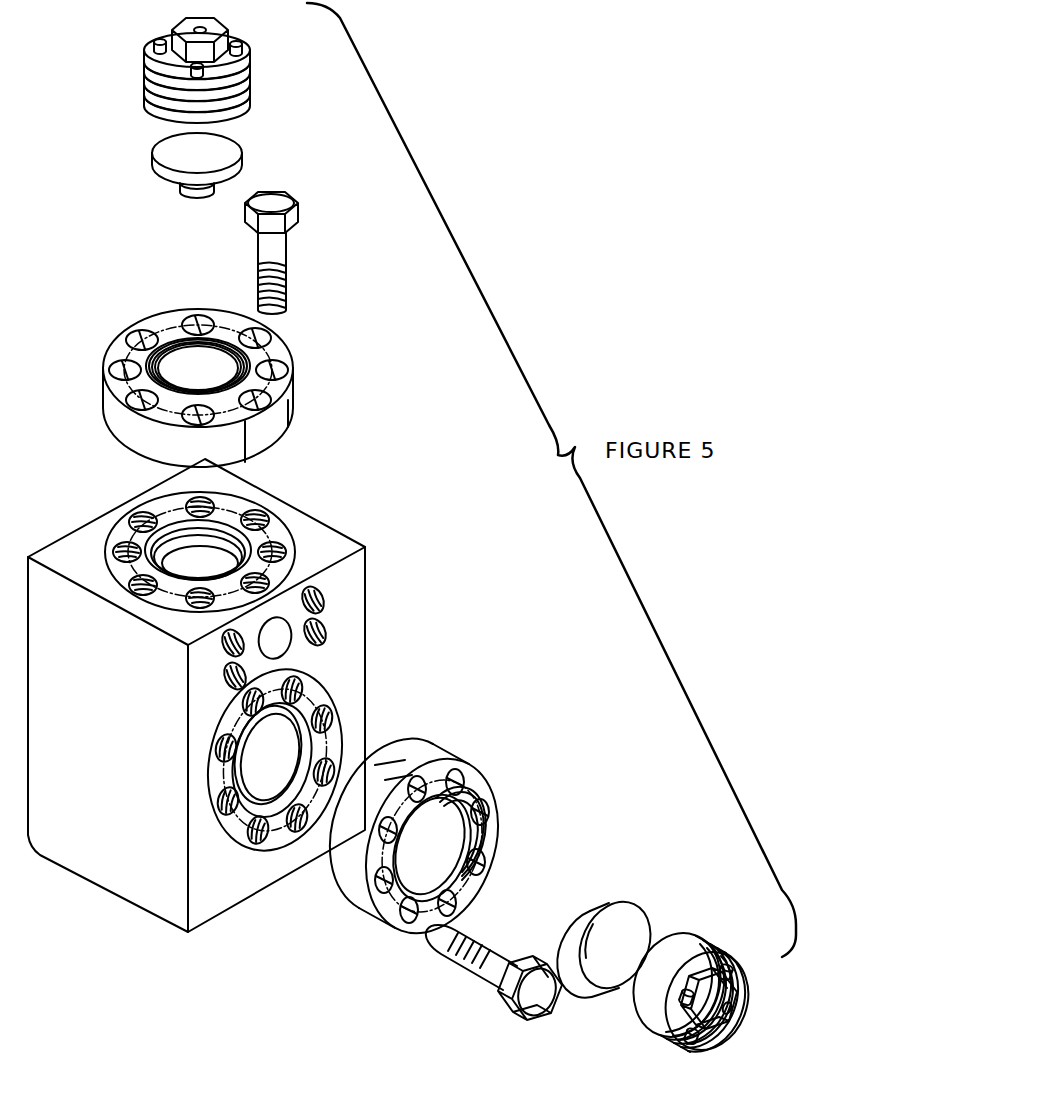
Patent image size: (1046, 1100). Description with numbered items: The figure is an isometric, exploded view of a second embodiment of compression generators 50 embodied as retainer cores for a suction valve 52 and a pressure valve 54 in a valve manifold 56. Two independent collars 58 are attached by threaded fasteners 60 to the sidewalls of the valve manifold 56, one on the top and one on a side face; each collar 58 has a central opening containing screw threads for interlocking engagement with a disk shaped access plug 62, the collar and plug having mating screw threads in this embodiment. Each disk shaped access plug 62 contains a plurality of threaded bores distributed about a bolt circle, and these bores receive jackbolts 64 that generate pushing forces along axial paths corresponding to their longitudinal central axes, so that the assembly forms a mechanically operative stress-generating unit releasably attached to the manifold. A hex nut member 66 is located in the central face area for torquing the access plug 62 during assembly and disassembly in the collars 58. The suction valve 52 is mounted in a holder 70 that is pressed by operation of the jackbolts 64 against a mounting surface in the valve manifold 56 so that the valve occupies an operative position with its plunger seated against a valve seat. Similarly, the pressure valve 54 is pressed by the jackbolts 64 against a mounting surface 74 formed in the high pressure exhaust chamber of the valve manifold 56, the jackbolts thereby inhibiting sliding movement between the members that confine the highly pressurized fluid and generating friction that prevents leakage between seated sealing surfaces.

The compression generator 50 is at (322, 30).
The suction valve 52 is at (155, 180).
The pressure valve 54 is at (630, 898).
The valve manifold 56 is at (332, 530).
The collar 58 is at (265, 435).
The threaded fastener 60 is at (265, 196).
The disk shaped access plug 62 is at (165, 105).
The jackbolt 64 is at (165, 40).
The hex nut member 66 is at (232, 35).
The holder 70 is at (209, 174).
The mounting surface 74 is at (268, 800).